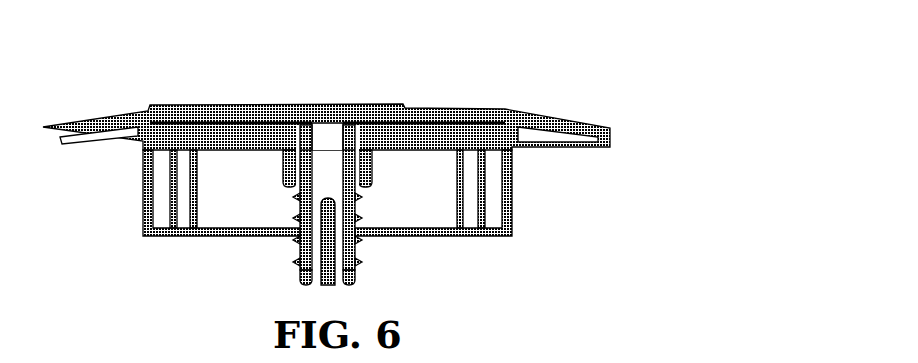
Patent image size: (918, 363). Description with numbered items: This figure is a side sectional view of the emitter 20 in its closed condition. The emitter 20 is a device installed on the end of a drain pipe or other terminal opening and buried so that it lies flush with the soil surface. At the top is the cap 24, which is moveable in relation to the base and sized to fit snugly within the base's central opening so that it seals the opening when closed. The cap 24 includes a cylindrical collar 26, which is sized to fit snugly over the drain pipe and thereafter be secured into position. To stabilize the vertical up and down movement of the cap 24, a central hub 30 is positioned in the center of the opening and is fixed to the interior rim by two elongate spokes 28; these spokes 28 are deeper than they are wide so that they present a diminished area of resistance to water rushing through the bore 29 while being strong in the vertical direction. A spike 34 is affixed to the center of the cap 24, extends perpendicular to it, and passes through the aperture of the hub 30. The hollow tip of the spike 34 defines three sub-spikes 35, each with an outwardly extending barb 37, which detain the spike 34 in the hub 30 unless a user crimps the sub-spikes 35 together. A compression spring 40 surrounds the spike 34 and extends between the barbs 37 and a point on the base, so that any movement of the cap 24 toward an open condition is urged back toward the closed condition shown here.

The emitter 20 is at (393, 175).
The cap 24 is at (455, 108).
The cylindrical collar 26 is at (512, 204).
The elongate spokes 28 is at (236, 150).
The bore 29 is at (152, 206).
The central hub 30 is at (368, 166).
The spike 34 is at (310, 145).
The sub-spikes 35 is at (362, 243).
The barb 37 is at (358, 262).
The compression spring 40 is at (298, 240).